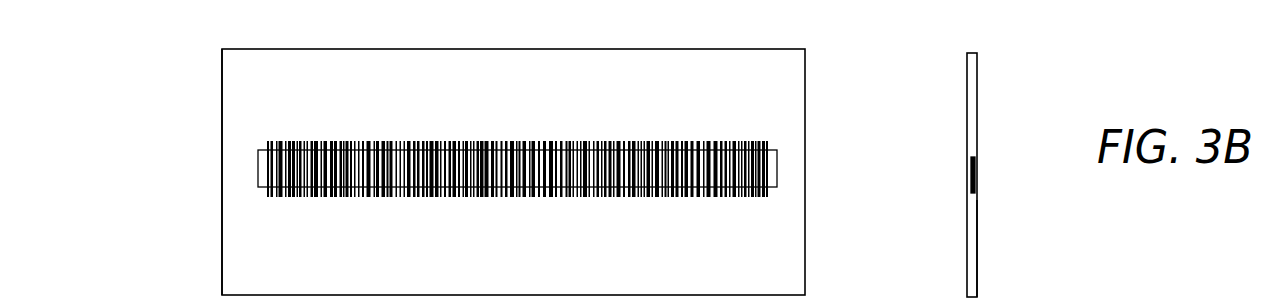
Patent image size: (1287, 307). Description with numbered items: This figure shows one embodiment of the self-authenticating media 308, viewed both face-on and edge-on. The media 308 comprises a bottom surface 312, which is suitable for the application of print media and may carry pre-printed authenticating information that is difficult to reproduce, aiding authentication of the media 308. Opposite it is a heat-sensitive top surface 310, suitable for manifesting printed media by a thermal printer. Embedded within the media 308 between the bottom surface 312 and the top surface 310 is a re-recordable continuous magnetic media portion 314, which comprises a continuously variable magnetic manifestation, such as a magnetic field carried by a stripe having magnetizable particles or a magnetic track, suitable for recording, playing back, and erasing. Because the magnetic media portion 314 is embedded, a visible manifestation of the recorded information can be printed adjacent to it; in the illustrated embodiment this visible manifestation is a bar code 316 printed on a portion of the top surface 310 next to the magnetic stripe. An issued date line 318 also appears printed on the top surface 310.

The self-authenticating media 308 is at (805, 63).
The heat-sensitive top surface 310 is at (232, 212).
The bottom surface 312 is at (977, 263).
The re-recordable continuous magnetic media portion 314 is at (777, 168).
The bar code 316 is at (668, 196).
The issued date text 318 is at (432, 263).